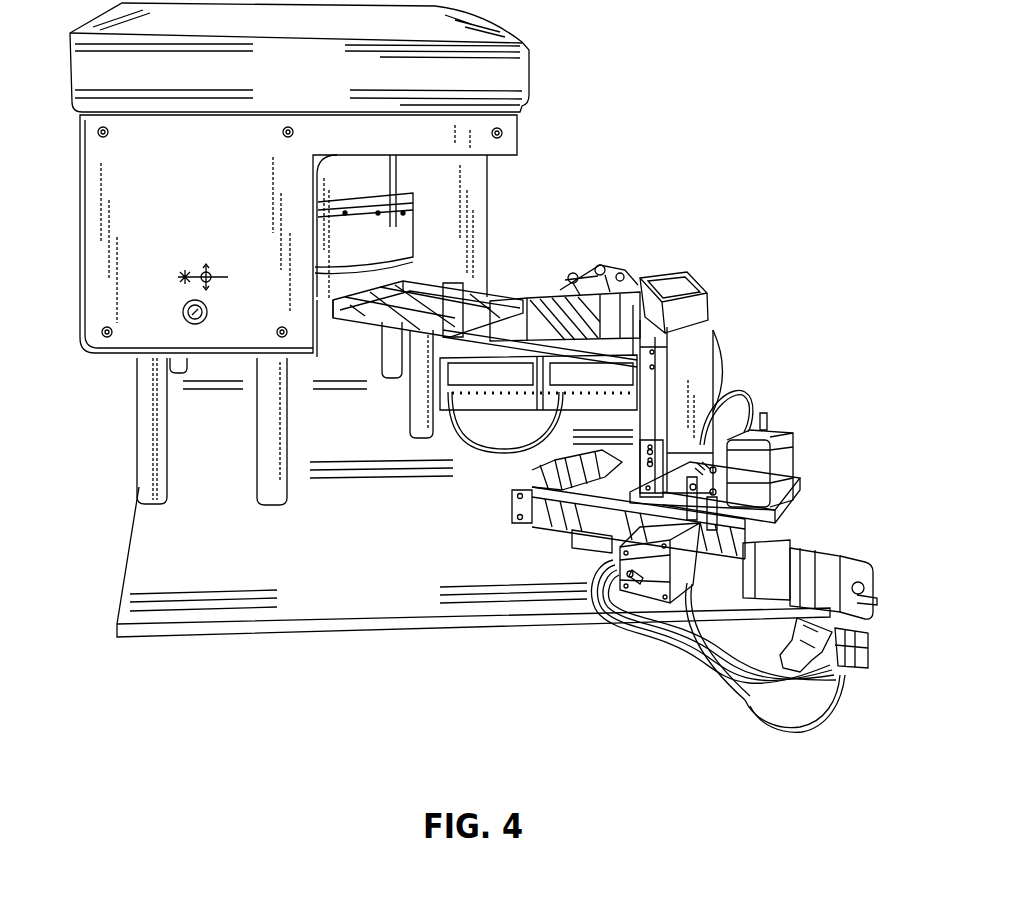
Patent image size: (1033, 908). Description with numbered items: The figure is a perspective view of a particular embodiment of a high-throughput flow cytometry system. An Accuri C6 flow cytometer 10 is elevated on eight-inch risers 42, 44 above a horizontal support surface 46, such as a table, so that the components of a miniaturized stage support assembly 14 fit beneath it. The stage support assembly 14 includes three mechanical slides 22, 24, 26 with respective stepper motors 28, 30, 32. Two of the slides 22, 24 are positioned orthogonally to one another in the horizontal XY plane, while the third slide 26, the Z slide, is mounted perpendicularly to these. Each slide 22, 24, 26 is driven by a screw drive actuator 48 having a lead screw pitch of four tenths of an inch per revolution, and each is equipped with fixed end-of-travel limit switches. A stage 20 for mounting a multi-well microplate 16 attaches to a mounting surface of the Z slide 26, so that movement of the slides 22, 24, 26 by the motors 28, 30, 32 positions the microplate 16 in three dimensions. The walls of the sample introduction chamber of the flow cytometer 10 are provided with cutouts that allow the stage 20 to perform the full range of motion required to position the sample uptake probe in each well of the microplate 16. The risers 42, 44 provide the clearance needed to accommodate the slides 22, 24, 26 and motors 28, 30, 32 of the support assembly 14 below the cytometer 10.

The flow cytometer 10 is at (172, 215).
The stage support assembly 14 is at (753, 373).
The multi-well microplate 16 is at (413, 283).
The stage 20 is at (520, 307).
The mechanical slide 22 is at (723, 567).
The mechanical slide 24 is at (753, 603).
The mechanical slide 26 is at (807, 520).
The stepper motor 28 is at (872, 578).
The stepper motor 30 is at (638, 590).
The stepper motor 32 is at (800, 443).
The riser 42 is at (267, 467).
The riser 44 is at (163, 383).
The horizontal support surface 46 is at (377, 541).
The screw drive actuator 48 is at (562, 490).